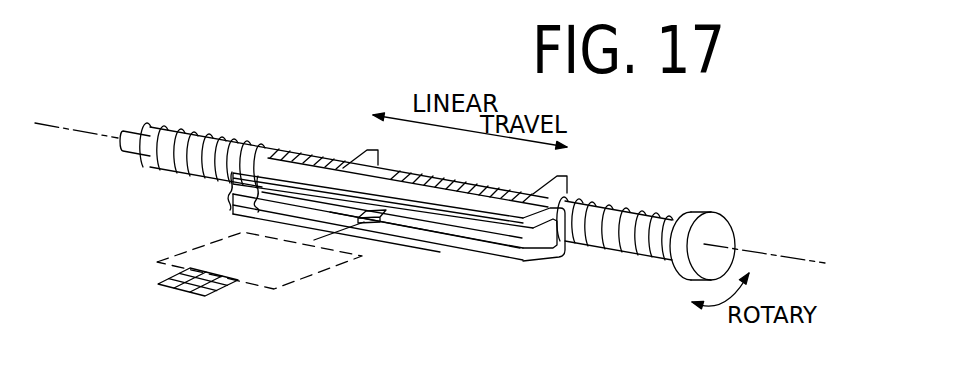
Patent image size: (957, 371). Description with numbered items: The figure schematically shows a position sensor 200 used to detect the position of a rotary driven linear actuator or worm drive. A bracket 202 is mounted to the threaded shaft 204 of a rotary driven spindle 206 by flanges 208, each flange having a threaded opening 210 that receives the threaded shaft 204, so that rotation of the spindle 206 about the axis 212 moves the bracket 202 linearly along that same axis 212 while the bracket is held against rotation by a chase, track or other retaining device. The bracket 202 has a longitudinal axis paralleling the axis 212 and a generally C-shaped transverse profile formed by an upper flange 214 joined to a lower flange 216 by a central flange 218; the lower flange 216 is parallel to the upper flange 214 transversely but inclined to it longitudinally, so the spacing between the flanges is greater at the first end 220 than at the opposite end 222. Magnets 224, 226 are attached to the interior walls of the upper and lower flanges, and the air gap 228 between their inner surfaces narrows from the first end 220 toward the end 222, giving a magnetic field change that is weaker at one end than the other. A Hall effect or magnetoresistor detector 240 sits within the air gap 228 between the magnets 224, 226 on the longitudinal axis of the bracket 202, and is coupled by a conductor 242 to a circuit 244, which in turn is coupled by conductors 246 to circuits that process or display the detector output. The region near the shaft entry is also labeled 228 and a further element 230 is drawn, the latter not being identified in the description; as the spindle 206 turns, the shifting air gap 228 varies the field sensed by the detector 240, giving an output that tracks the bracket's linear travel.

The position sensor 200 is at (129, 223).
The bracket 202 is at (276, 161).
The threaded shaft 204 is at (610, 207).
The rotary driven spindle 206 is at (698, 208).
The flanges 208 is at (343, 167).
The threaded opening 210 is at (380, 164).
The axis 212 is at (801, 256).
The upper flange 214 is at (445, 200).
The lower flange 216 is at (488, 262).
The central flange 218 is at (564, 240).
The first end 220 is at (222, 213).
The end 222 is at (385, 238).
The magnet 224 is at (407, 224).
The magnet 226 is at (428, 237).
The air gap 228 is at (233, 187).
The follower 230 is at (257, 207).
The detector 240 is at (368, 218).
The conductor 242 is at (314, 240).
The circuit 244 is at (281, 273).
The conductors 246 is at (233, 276).